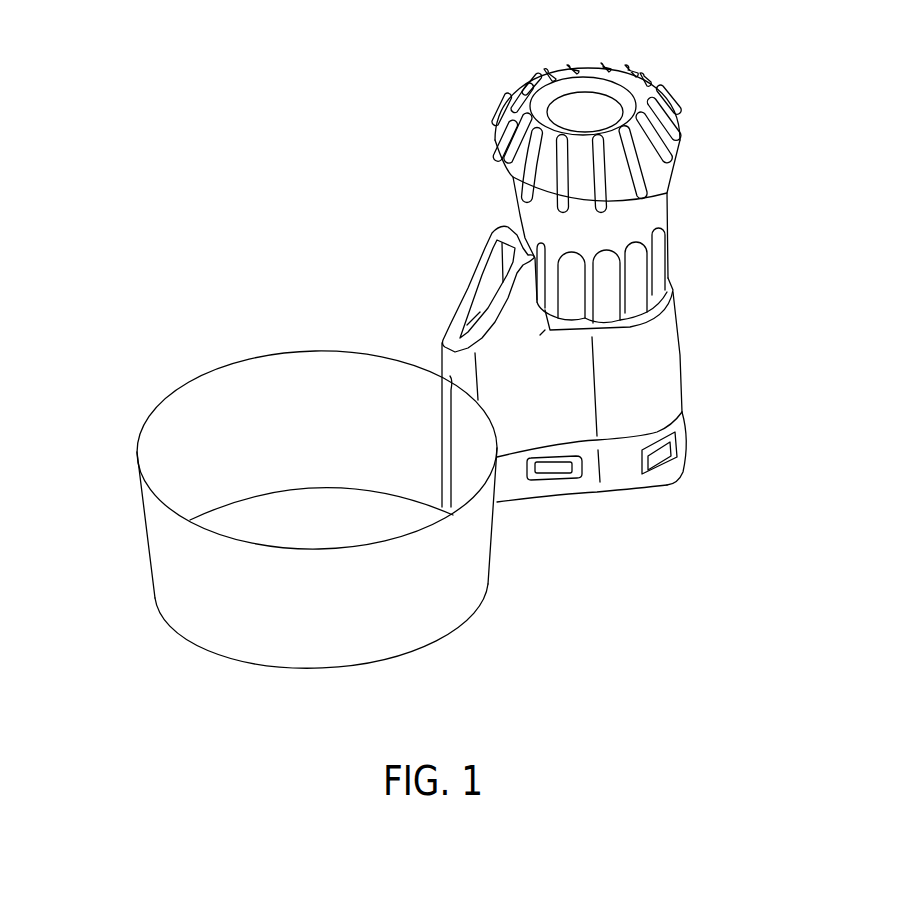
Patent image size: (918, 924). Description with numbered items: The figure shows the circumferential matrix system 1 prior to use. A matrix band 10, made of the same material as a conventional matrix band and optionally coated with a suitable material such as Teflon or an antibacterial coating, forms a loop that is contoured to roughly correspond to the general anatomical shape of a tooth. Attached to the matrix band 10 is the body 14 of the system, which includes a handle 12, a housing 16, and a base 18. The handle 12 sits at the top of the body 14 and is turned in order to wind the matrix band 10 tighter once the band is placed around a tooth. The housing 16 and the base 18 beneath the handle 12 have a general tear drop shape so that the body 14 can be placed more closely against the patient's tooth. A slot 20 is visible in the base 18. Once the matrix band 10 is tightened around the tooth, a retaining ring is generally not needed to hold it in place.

The circumferential matrix system 1 is at (147, 13).
The matrix band 10 is at (133, 523).
The handle 12 is at (660, 203).
The body 14 is at (805, 432).
The housing 16 is at (668, 347).
The base 18 is at (675, 420).
The slot aperture 20 is at (555, 477).